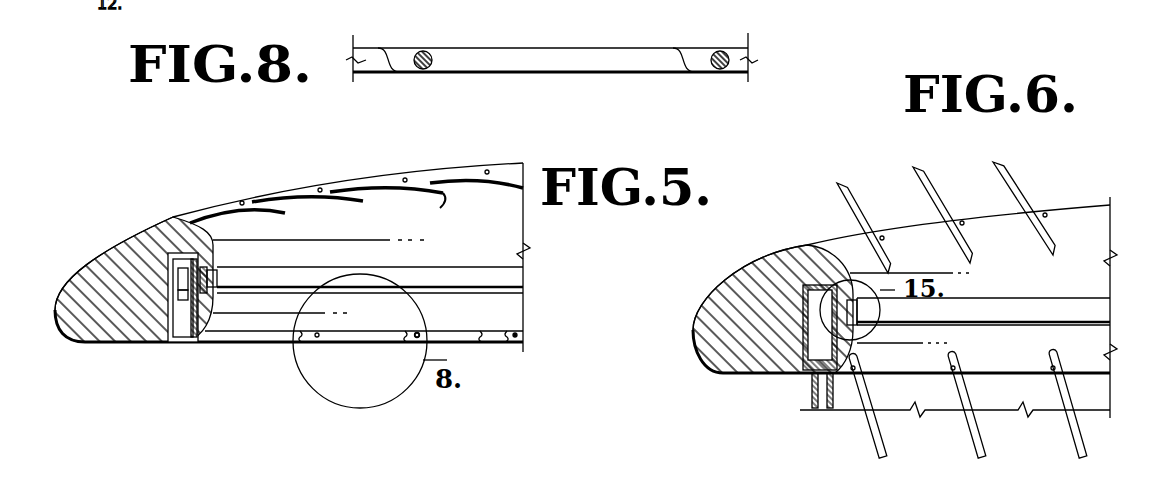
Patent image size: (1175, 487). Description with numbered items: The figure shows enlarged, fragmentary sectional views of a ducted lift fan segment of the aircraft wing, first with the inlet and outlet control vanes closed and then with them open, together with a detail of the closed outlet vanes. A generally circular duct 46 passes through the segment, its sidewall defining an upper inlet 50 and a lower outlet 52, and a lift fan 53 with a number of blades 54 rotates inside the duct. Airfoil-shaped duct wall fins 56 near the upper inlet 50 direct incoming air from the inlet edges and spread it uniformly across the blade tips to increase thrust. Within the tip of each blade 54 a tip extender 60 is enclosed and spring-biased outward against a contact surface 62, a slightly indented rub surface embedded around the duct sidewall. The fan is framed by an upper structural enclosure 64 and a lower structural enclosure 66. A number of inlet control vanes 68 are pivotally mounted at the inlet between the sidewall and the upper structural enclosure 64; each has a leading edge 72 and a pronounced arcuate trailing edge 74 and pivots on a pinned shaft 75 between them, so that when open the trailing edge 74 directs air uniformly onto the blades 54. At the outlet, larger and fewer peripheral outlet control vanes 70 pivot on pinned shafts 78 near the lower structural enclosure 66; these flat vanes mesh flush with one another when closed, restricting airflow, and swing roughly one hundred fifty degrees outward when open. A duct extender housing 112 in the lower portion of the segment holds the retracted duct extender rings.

In FIG. 5, the duct 46 is at (250, 227).
In FIG. 5, the upper inlet 50 is at (523, 231).
In FIG. 5, the lower outlet 52 is at (227, 323).
In FIG. 6, the lift fan 53 is at (1102, 323).
In FIG. 5, the blade 54 is at (505, 271).
In FIG. 6, the blade 54 is at (1110, 298).
In FIG. 5, the duct wall fin 56 is at (204, 226).
In FIG. 6, the duct wall fin 56 is at (850, 260).
In FIG. 5, the tip extender 60 is at (217, 293).
In FIG. 6, the tip extender 60 is at (857, 323).
In FIG. 5, the contact surface 62 is at (205, 243).
In FIG. 6, the contact surface 62 is at (877, 292).
In FIG. 5, the upper structural enclosure 64 is at (293, 240).
In FIG. 5, the lower structural enclosure 66 is at (282, 313).
In FIG. 5, the inlet control vane 68 is at (370, 180).
In FIG. 6, the inlet control vane 68 is at (847, 192).
In FIG. 8, the peripheral outlet control vane 70 is at (562, 52).
In FIG. 5, the peripheral outlet control vane 70 is at (487, 341).
In FIG. 6, the peripheral outlet control vane 70 is at (872, 433).
In FIG. 5, the leading edge 72 is at (335, 185).
In FIG. 6, the leading edge 72 is at (913, 165).
In FIG. 5, the arcuate trailing edge 74 is at (441, 204).
In FIG. 6, the arcuate trailing edge 74 is at (968, 257).
In FIG. 5, the pinned shaft 75 is at (405, 178).
In FIG. 6, the pinned shaft 75 is at (963, 221).
In FIG. 8, the pinned shaft 78 is at (424, 51).
In FIG. 5, the pinned shaft 78 is at (418, 338).
In FIG. 6, the pinned shaft 78 is at (955, 362).
In FIG. 5, the duct extender housing 112 is at (180, 307).
In FIG. 6, the duct extender housing 112 is at (813, 332).